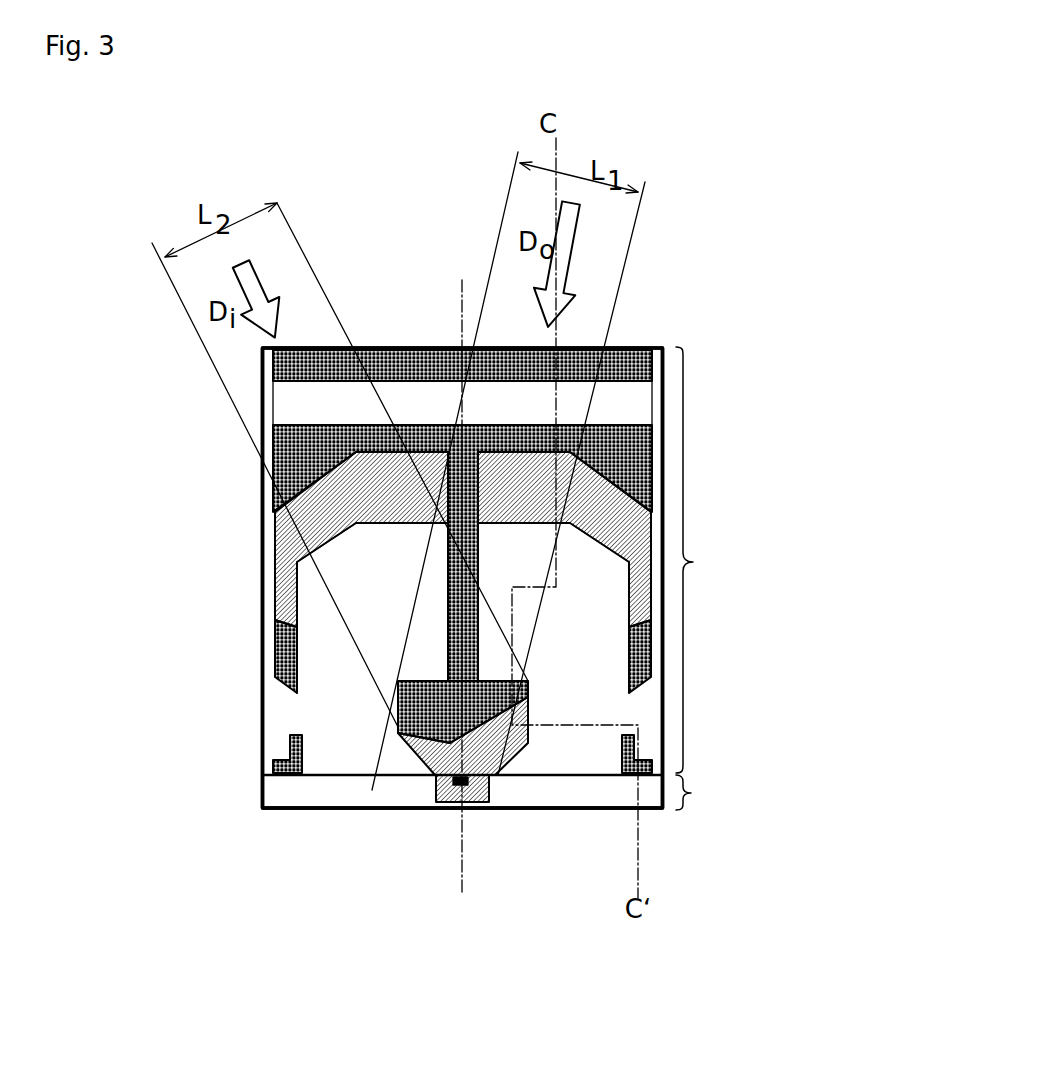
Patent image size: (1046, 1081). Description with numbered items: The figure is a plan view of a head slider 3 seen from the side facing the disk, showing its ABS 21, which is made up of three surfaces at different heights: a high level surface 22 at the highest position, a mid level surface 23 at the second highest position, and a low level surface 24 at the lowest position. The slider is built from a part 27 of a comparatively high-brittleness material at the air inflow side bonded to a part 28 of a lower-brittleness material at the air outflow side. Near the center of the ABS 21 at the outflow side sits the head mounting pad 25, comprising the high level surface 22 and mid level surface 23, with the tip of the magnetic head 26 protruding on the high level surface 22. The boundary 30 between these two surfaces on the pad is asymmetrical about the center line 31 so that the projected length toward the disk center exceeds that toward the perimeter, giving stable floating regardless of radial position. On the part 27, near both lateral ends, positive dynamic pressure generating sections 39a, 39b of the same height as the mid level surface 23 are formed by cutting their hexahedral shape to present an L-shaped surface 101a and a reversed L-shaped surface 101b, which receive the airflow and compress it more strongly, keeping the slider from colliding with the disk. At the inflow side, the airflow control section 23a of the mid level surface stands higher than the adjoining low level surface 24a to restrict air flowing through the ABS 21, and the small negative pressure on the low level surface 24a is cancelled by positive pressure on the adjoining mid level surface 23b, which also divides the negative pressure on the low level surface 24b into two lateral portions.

The head slider 3 is at (455, 194).
The ABS 21 is at (382, 340).
The high level surface 22 is at (497, 770).
The mid level surface 23 is at (462, 490).
The airflow control section 23a is at (585, 367).
The mid level surface 23b is at (537, 437).
The low level surface 24 is at (560, 470).
The low level surface 24a is at (528, 400).
The low level surface 24b is at (603, 558).
The head mounting pad 25 is at (425, 748).
The magnetic head 26 is at (478, 803).
The part made of material of high brittleness 27 is at (709, 560).
The part made of material of low brittleness 28 is at (502, 792).
The boundary 30 is at (443, 800).
The center line 31 is at (465, 855).
The positive dynamic pressure generating section 39a is at (278, 777).
The positive dynamic pressure generating section 39b is at (630, 778).
The L-shaped surface 101a is at (635, 757).
The reversed L-shaped surface 101b is at (287, 748).